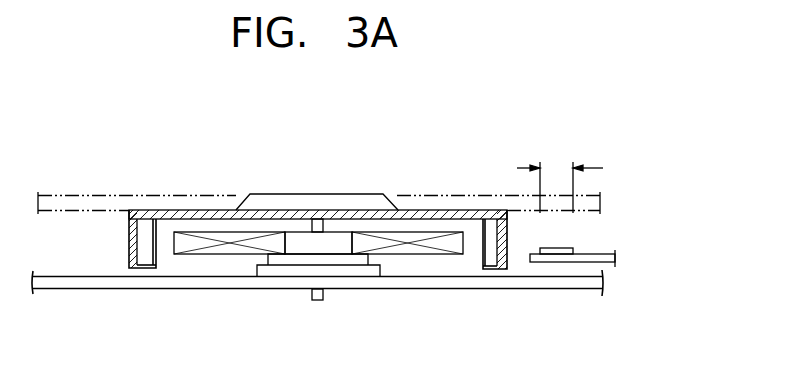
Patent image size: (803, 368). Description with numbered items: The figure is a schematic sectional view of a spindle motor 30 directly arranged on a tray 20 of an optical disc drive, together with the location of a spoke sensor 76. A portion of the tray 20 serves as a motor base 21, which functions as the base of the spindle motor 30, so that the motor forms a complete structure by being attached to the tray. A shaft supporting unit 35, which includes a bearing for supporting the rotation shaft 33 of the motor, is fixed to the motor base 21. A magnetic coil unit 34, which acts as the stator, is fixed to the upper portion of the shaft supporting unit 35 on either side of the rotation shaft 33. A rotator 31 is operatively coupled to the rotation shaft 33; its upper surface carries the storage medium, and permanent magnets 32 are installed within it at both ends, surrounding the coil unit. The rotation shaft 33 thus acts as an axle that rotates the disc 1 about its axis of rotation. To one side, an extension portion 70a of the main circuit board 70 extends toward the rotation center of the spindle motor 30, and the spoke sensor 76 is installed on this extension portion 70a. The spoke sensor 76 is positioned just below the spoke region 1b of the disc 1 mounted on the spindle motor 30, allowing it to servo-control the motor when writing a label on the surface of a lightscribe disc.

The disc 1 is at (50, 197).
The spoke region 1b is at (560, 178).
The spindle motor 30 is at (513, 130).
The rotator 31 is at (212, 218).
The permanent magnets 32 is at (158, 228).
The rotation shaft 33 is at (328, 222).
The magnetic coil unit 34 is at (202, 254).
The shaft supporting unit 35 is at (268, 272).
The tray 20 is at (317, 307).
The motor base 21 is at (552, 288).
The main circuit board 70 is at (624, 258).
The extension portion 70a is at (615, 258).
The spoke sensor 76 is at (565, 246).